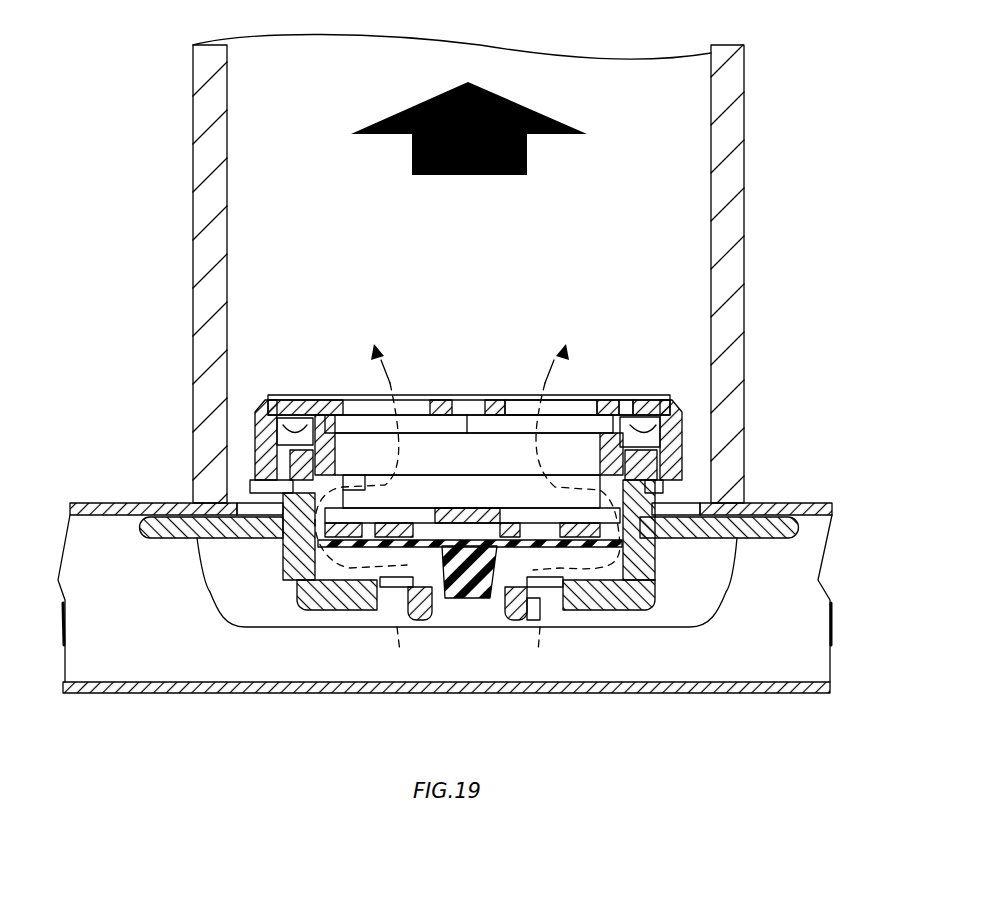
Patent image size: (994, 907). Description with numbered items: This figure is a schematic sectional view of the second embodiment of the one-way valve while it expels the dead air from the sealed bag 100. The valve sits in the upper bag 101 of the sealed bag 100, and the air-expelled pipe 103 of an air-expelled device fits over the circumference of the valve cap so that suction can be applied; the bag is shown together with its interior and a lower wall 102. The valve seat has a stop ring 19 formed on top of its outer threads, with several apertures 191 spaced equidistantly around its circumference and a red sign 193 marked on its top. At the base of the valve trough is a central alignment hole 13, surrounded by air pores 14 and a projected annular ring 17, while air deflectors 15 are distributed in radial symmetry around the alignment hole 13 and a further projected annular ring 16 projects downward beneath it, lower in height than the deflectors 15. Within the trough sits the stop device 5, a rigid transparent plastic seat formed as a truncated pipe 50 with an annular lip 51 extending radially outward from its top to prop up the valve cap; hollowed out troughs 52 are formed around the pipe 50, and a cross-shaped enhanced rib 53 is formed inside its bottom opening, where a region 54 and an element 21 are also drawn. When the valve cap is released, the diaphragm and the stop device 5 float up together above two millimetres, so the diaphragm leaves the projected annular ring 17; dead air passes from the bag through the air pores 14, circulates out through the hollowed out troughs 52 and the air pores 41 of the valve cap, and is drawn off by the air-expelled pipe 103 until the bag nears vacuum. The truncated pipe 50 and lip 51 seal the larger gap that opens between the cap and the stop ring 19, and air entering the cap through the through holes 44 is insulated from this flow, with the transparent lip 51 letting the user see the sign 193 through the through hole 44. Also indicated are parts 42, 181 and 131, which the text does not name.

The air-expelled pipe 103 is at (738, 121).
The air pores 41 is at (567, 403).
The through holes 44 is at (625, 398).
The truncated pipe 50 is at (667, 397).
The sign 193 is at (658, 418).
The stop device 5 is at (372, 440).
The stop ring 19 is at (303, 393).
The annular lip 51 is at (293, 420).
The apertures 191 is at (268, 432).
The sealing ring 42 is at (262, 450).
The hollowed out troughs 52 is at (278, 478).
The flange tab 181 is at (285, 489).
The projected annular ring 17 is at (192, 506).
The sealed bag 100 is at (80, 480).
The upper bag 101 is at (777, 505).
The tank bottom wall 102 is at (808, 694).
The air deflectors 15 is at (247, 605).
The enhanced rib 53 is at (300, 605).
The housing bottom 54 is at (592, 627).
The valve body 21 is at (466, 600).
The central alignment hole 13 is at (490, 610).
The projected annular ring 16 is at (526, 614).
The passage hole 131 is at (532, 614).
The air pores 14 is at (552, 600).